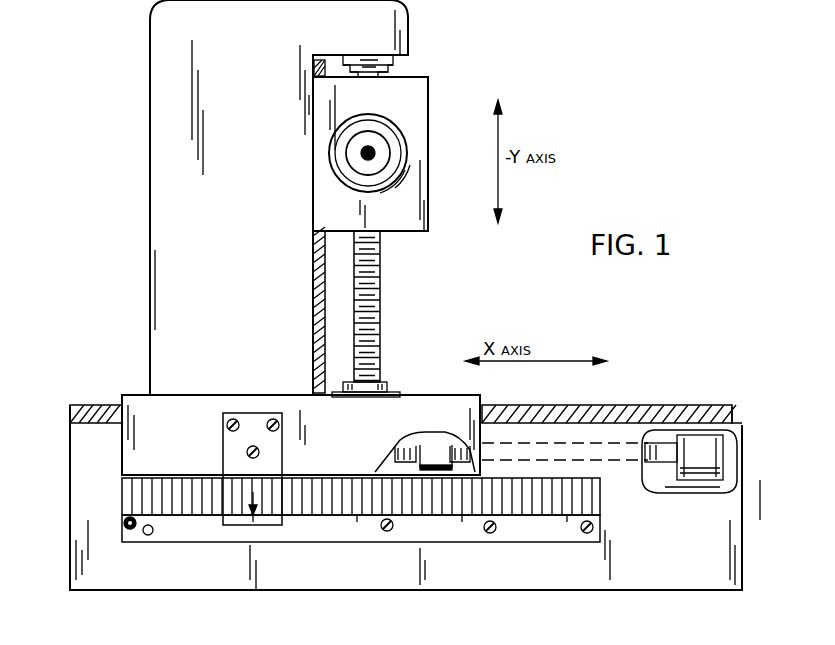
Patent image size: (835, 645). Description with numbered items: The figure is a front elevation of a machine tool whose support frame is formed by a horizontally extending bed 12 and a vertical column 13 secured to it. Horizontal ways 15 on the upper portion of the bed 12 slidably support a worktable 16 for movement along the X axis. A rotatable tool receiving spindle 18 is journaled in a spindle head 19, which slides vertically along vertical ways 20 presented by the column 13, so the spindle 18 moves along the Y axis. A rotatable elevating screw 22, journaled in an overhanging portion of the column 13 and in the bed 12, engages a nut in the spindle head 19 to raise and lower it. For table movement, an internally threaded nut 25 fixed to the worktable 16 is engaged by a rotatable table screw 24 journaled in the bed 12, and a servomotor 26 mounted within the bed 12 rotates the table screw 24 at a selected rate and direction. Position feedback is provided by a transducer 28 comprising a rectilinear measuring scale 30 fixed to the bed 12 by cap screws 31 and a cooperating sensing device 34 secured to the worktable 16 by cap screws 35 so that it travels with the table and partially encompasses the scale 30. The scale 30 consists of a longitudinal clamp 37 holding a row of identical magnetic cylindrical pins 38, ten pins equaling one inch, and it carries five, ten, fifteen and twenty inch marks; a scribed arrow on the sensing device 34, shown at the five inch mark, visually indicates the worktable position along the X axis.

The bed 12 is at (702, 578).
The column 13 is at (167, 318).
The horizontal ways 15 is at (75, 398).
The worktable 16 is at (417, 408).
The tool receiving spindle 18 is at (375, 150).
The spindle head 19 is at (420, 96).
The vertical ways 20 is at (335, 350).
The elevating screw 22 is at (372, 353).
The table screw 24 is at (592, 457).
The internally threaded nut 25 is at (437, 447).
The servomotor 26 is at (713, 457).
The transducer 28 is at (215, 464).
The rectilinear measuring scale 30 is at (605, 522).
The cap screws 31 is at (127, 533).
The sensing device 34 is at (235, 513).
The cap screws 35 is at (235, 419).
The longitudinal clamp 37 is at (182, 532).
The magnetic cylindrical pins 38 is at (597, 502).